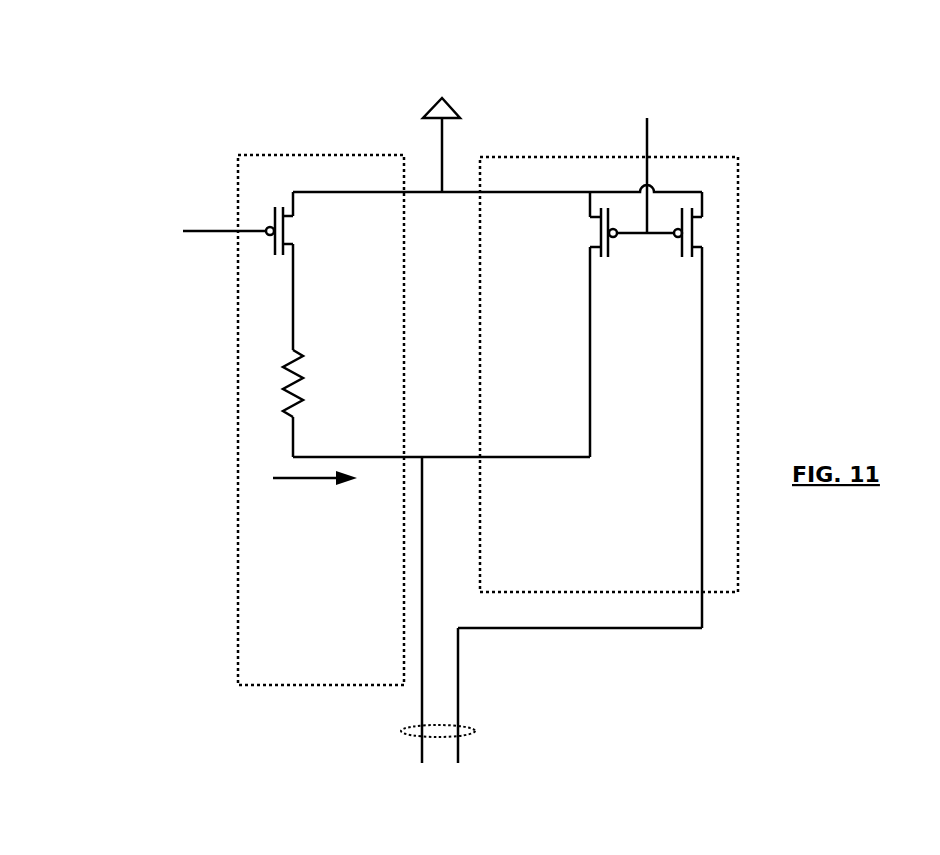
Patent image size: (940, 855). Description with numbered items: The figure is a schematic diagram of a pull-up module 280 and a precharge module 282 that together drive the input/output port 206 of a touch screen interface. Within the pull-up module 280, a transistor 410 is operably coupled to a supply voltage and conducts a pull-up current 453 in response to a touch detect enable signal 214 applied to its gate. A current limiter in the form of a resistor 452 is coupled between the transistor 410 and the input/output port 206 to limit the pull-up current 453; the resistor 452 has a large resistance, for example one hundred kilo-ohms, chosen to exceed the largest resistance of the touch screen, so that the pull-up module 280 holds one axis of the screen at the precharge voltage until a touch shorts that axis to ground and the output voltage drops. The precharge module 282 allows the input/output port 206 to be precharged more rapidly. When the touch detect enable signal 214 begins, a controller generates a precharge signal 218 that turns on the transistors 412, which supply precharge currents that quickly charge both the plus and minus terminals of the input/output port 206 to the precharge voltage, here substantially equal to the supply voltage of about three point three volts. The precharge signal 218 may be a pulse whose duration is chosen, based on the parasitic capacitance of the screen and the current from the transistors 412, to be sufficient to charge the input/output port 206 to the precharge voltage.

The touch detect enable signal 214 is at (174, 202).
The precharge signal 218 is at (647, 126).
The transistor 410 is at (315, 257).
The transistors 412 is at (565, 258).
The resistor 452 is at (315, 391).
The pull-up current 453 is at (313, 523).
The pull-up module 280 is at (321, 420).
The precharge module 282 is at (609, 374).
The input/output port 206 is at (477, 731).